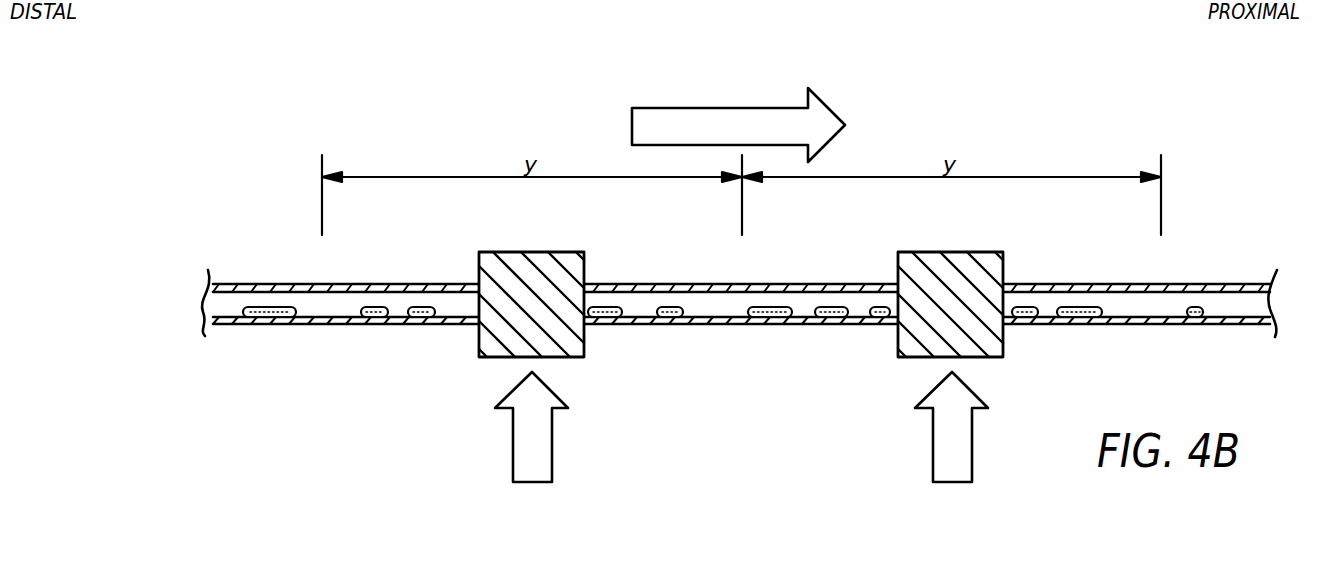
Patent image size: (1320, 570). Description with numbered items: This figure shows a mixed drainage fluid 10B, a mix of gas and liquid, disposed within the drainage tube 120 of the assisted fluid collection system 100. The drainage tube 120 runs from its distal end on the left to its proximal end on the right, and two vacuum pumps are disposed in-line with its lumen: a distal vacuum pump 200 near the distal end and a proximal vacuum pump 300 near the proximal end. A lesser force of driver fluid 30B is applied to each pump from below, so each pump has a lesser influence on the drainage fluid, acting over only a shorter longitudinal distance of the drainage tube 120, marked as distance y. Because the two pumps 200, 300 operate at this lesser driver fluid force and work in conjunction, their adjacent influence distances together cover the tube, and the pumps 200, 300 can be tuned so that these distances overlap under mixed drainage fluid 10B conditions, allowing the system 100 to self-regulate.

The assisted fluid collection system 100 is at (268, 153).
The drainage tube 120 is at (262, 284).
The mixed drainage fluid 10B is at (422, 306).
The distal vacuum pump 200 is at (495, 358).
The proximal vacuum pump 300 is at (925, 358).
The lesser force of driver fluid 30B is at (513, 445).